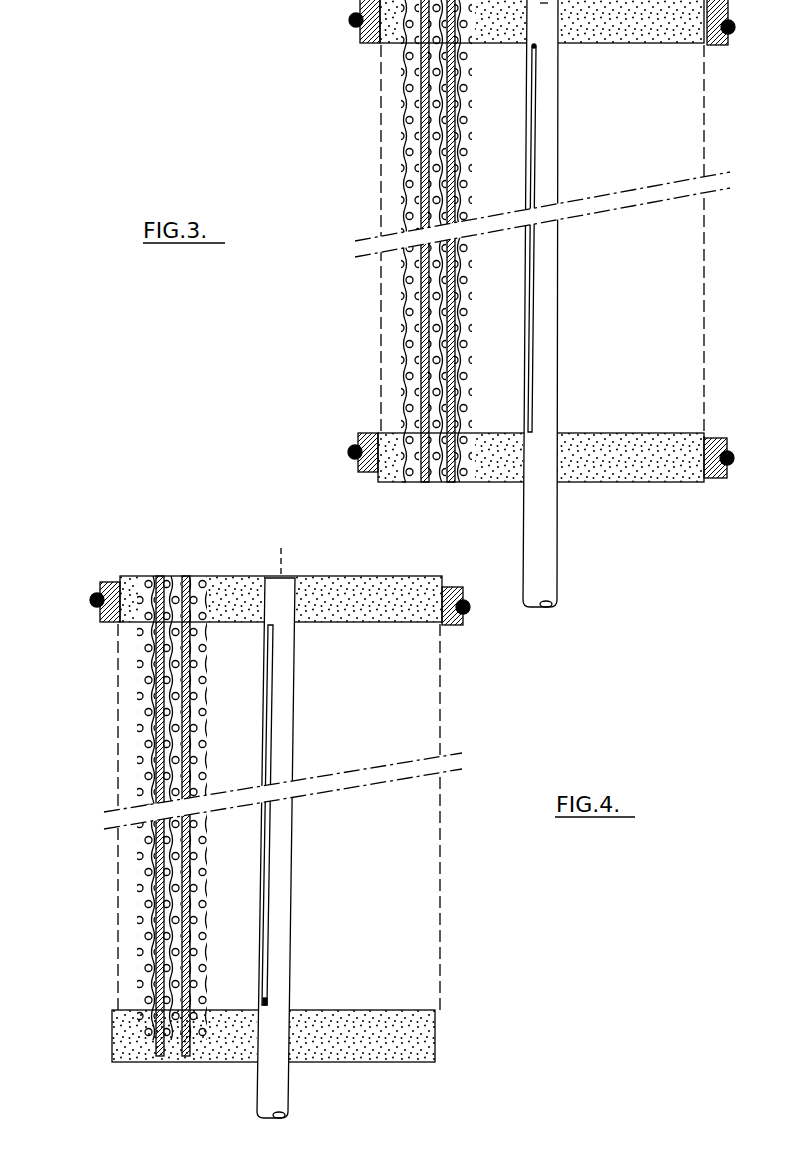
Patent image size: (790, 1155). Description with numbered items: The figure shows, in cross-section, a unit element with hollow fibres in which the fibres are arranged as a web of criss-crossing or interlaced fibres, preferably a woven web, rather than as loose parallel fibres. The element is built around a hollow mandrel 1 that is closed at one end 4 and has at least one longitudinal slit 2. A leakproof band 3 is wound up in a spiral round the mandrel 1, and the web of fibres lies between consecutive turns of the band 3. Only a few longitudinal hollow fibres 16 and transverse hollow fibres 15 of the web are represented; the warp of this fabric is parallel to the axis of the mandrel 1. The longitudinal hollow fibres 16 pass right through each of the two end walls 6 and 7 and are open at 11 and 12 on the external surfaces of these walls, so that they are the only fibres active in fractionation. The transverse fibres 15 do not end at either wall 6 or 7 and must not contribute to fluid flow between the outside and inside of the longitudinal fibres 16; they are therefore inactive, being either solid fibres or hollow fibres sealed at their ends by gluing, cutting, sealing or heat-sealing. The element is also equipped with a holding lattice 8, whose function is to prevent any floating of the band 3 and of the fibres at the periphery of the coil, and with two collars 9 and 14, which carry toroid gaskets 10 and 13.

In FIG. 3, the hollow mandrel 1 is at (533, 515).
In FIG. 4, the hollow mandrel 1 is at (272, 1090).
In FIG. 3, the longitudinal slit 2 is at (527, 420).
In FIG. 4, the longitudinal slit 2 is at (262, 1002).
In FIG. 3, the leakproof band 3 is at (385, 241).
In FIG. 4, the leakproof band 3 is at (122, 789).
In FIG. 3, the closed end of the mandrel 4 is at (544, 9).
In FIG. 4, the closed end of the mandrel 4 is at (277, 575).
In FIG. 3, the end wall 6 is at (480, 465).
In FIG. 4, the end wall 6 is at (217, 1040).
In FIG. 3, the end wall 7 is at (643, 28).
In FIG. 4, the end wall 7 is at (328, 598).
In FIG. 3, the holding lattice 8 is at (380, 358).
In FIG. 4, the holding lattice 8 is at (112, 928).
In FIG. 3, the collar 9 is at (360, 437).
In FIG. 3, the toroid gasket 10 is at (347, 452).
In FIG. 3, the opening of the hollow fibres 11 is at (355, 2).
In FIG. 4, the opening of the hollow fibres 11 is at (145, 574).
In FIG. 3, the opening of the hollow fibres 12 is at (404, 484).
In FIG. 3, the toroid gasket 13 is at (350, 20).
In FIG. 4, the toroid gasket 13 is at (89, 598).
In FIG. 3, the collar 14 is at (362, 40).
In FIG. 4, the collar 14 is at (100, 615).
In FIG. 3, the transverse hollow fibres 15 is at (440, 290).
In FIG. 4, the transverse hollow fibres 15 is at (178, 862).
In FIG. 3, the longitudinal hollow fibres 16 is at (455, 333).
In FIG. 4, the longitudinal hollow fibres 16 is at (176, 906).